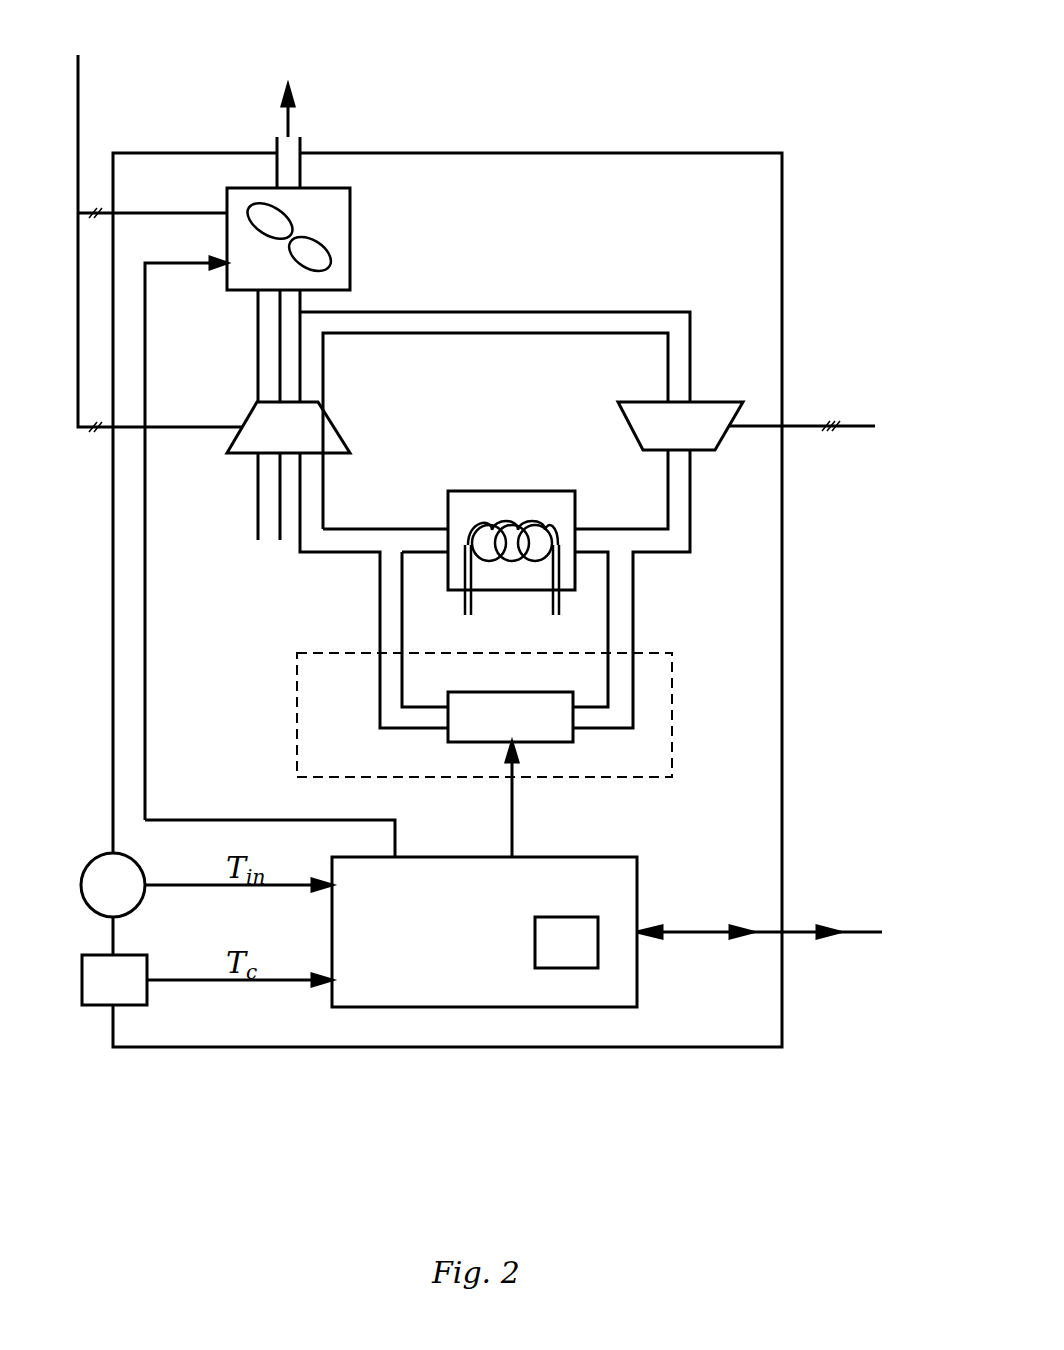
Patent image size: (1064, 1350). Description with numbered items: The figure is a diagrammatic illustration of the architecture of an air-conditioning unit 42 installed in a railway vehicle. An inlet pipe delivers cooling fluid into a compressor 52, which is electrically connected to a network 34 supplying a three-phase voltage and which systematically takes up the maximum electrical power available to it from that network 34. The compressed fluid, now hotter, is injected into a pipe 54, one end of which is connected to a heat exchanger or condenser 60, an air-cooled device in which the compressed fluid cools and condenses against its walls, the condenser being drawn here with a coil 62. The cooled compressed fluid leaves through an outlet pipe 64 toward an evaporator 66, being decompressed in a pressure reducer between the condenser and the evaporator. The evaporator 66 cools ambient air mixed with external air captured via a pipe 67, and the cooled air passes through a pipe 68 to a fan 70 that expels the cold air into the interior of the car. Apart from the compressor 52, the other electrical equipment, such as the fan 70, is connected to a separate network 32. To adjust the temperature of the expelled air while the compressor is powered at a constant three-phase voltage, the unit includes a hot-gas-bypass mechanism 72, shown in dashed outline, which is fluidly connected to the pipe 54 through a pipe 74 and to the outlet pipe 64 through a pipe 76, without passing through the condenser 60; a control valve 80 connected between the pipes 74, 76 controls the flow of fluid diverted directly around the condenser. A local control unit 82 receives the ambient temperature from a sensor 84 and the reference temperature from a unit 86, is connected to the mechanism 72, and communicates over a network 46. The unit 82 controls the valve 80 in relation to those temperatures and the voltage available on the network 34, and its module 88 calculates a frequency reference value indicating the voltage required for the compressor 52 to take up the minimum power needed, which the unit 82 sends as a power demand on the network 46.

The network 32 is at (78, 98).
The network 34 is at (857, 426).
The air-conditioning unit 42 is at (762, 67).
The network 46 is at (847, 930).
The compressor 52 is at (680, 426).
The pipe 54 is at (702, 491).
The condenser 60 is at (522, 481).
The coil 62 is at (553, 597).
The outlet pipe 64 is at (323, 482).
The evaporator 66 is at (288, 427).
The pipe 67 is at (257, 495).
The pipe 68 is at (257, 353).
The fan 70 is at (353, 238).
The mechanism 72 is at (686, 699).
The pipe 74 is at (635, 615).
The pipe 76 is at (380, 617).
The control valve 80 is at (510, 774).
The local unit 82 is at (647, 892).
The sensor 84 is at (206, 885).
The unit 86 is at (207, 980).
The module 88 is at (566, 942).